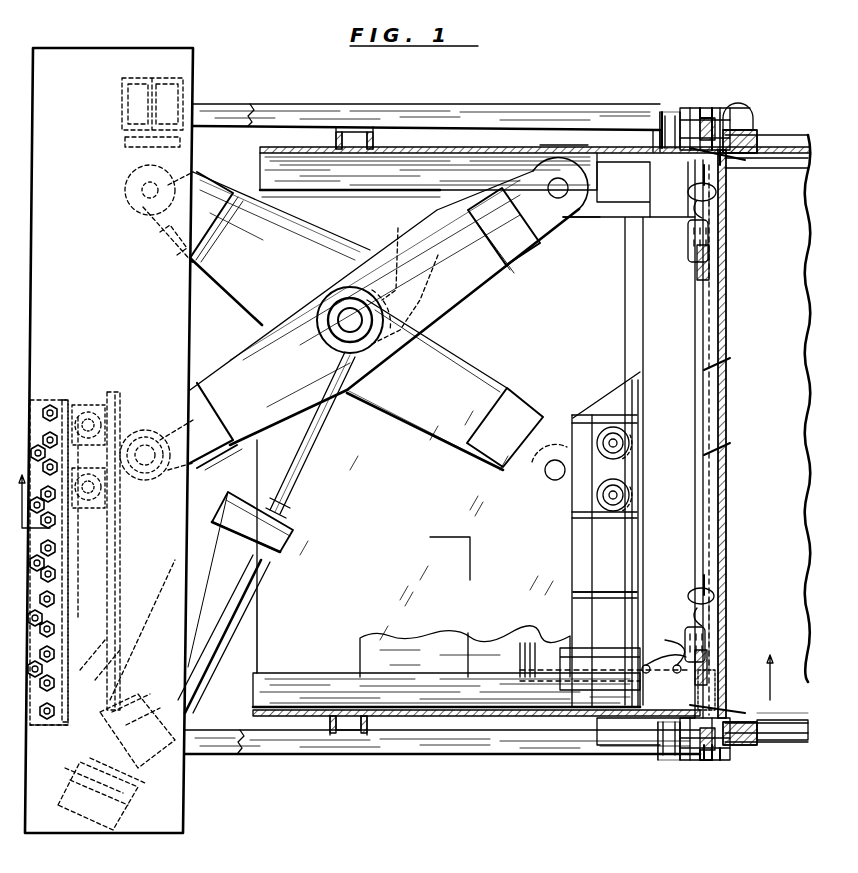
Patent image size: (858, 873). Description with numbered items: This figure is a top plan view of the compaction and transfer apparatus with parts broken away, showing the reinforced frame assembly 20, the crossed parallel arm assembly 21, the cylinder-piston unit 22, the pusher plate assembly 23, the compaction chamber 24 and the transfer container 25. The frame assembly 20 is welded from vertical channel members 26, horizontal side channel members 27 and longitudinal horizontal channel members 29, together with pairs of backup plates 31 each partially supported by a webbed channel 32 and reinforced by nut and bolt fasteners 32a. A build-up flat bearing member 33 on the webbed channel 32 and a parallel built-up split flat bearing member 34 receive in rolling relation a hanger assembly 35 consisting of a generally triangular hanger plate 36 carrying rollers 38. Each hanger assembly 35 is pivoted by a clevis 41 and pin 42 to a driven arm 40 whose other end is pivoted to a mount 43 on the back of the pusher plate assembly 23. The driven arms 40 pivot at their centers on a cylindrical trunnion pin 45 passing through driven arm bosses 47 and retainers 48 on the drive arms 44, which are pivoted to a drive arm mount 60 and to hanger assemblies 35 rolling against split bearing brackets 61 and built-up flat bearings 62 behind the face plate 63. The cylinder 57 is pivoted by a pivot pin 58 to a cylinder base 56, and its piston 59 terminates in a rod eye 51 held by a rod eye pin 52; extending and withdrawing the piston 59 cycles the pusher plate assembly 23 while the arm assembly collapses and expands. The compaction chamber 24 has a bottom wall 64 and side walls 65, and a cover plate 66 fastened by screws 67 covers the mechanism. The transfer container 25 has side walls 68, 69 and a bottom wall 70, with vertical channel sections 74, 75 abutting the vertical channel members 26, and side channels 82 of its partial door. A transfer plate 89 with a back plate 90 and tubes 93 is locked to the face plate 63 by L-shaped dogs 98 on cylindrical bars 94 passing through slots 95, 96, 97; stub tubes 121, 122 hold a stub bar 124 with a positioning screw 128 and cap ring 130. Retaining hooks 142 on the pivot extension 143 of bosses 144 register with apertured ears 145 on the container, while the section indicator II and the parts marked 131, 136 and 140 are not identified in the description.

The reinforced frame assembly 20 is at (568, 755).
The crossed parallel arm assembly 21 is at (410, 410).
The cylinder-piston unit 22 is at (254, 598).
The pusher plate assembly 23 is at (621, 461).
The compaction chamber 24 is at (405, 542).
The transfer container 25 is at (760, 480).
The vertical channel members 26 is at (336, 133).
The horizontal side channel members 27 is at (450, 118).
The longitudinal horizontal channel members 29 is at (393, 180).
The backup plates 31 is at (186, 790).
The webbed channel 32 is at (32, 725).
The nut and bolt fasteners 32a is at (42, 441).
The build-up flat bearing member 33 is at (72, 640).
The built-up split flat bearing members 34 is at (94, 665).
The hanger assembly 35 is at (135, 500).
The hanger plate 36 is at (140, 430).
The rollers 38 is at (92, 410).
The driven arm 40 is at (237, 356).
The clevis 41 is at (215, 190).
The pin 42 is at (128, 190).
The mount 43 is at (585, 214).
The drive arms 44 is at (277, 220).
The cylindrical trunnion pin 45 is at (345, 318).
The driven arm bosses 47 is at (324, 347).
The retainers 48 is at (335, 360).
The rod eye 51 is at (415, 285).
The rod eye pin 52 is at (394, 249).
The cylinder base 56 is at (142, 779).
The cylinder 57 is at (252, 572).
The pivot pin 58 is at (148, 720).
The piston 59 is at (300, 475).
The drive arm mount 60 is at (130, 163).
The split bearing brackets 61 is at (584, 433).
The built-up flat bearings 62 is at (628, 564).
The face plate 63 is at (693, 468).
The bottom wall 64 is at (267, 663).
The side walls 65 is at (505, 140).
The cover plate 66 is at (492, 640).
The screws 67 is at (643, 666).
The side wall 68 is at (787, 716).
The side wall 69 is at (792, 158).
The bottom wall 70 is at (761, 326).
The vertical channel section 74 is at (715, 756).
The vertical channel section 75 is at (743, 132).
The side channels 82 is at (720, 152).
The transfer plate 89 is at (732, 450).
The back plate 90 is at (730, 376).
The tubes 93 is at (724, 296).
The cylindrical bar 94 is at (712, 232).
The spaced slots 95 is at (696, 186).
The tube slots 96 is at (708, 196).
The slots 97 is at (690, 204).
The L-shaped dogs 98 is at (685, 198).
The stub tubes 121 is at (700, 760).
The stub tubes 122 is at (727, 110).
The stub bar 124 is at (714, 762).
The positioning screw 128 is at (708, 754).
The cap ring 130 is at (718, 764).
The block 131 is at (664, 117).
The collar 136 is at (713, 110).
The bearing housing 140 is at (690, 108).
The retaining hooks 142 is at (690, 107).
The pivot extension 143 is at (678, 112).
The bosses 144 is at (640, 747).
The apertured ears 145 is at (749, 114).
The section line II is at (396, 587).